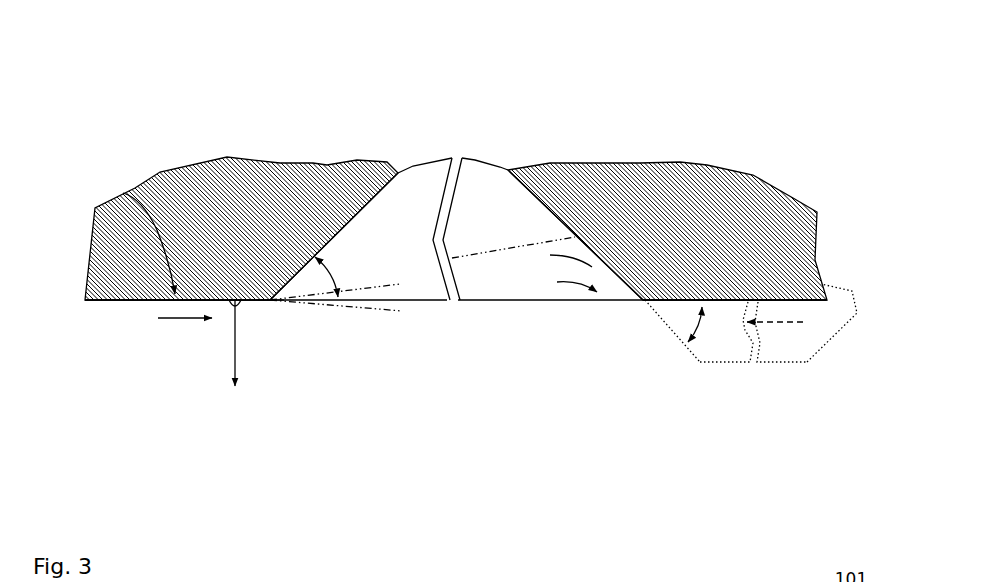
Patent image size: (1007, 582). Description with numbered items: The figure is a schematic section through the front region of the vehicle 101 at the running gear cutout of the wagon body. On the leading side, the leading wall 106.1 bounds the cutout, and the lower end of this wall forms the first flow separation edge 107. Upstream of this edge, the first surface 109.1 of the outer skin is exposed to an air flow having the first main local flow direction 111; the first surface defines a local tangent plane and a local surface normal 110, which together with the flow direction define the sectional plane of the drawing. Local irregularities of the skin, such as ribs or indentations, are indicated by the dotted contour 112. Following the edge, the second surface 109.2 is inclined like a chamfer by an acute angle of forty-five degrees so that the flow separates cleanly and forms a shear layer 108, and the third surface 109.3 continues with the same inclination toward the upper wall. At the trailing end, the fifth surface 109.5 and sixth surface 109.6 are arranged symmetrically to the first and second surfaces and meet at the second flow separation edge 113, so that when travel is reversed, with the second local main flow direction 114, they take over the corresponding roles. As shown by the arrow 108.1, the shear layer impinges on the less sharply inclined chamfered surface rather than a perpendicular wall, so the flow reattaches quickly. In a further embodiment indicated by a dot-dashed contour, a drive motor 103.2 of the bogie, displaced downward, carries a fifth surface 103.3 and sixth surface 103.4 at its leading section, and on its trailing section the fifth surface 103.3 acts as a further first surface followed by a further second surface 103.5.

The vehicle 101 is at (798, 58).
The drive motor 103.2 is at (772, 364).
The fifth surface 103.3 is at (717, 363).
The sixth surface 103.4 is at (675, 340).
The further second surface 103.5 is at (818, 352).
The leading wall 106.1 is at (323, 165).
The first flow separation edge 107 is at (268, 305).
The shear layer 108 is at (500, 246).
The arrow 108.1 is at (575, 252).
The first surface 109.1 is at (127, 303).
The second surface 109.2 is at (336, 243).
The third surface 109.3 is at (400, 174).
The fifth surface 109.5 is at (740, 306).
The sixth surface 109.6 is at (608, 274).
The local surface normal 110 is at (233, 345).
The first main local flow direction 111 is at (182, 323).
The dotted contour 112 is at (123, 193).
The second flow separation edge 113 is at (643, 307).
The second local main flow direction 114 is at (780, 316).